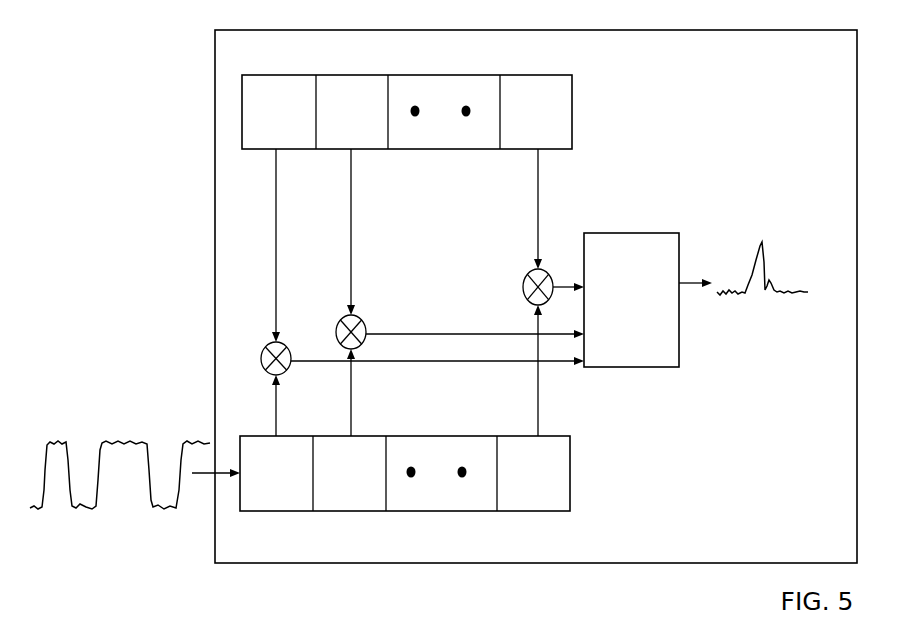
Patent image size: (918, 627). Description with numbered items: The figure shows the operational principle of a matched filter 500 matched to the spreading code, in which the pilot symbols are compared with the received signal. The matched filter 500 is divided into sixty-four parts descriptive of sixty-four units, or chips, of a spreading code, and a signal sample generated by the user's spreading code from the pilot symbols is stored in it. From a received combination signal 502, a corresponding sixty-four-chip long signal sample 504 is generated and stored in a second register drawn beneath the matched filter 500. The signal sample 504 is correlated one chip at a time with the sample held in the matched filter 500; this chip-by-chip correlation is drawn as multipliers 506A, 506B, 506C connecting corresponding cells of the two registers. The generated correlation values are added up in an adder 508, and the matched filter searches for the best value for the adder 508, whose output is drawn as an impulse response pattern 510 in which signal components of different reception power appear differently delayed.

The matched filter 500 is at (573, 135).
The received combination signal 502 is at (63, 443).
The signal sample 504 is at (570, 495).
The multiplier 506A is at (288, 348).
The multiplier 506B is at (365, 323).
The multiplier 506C is at (553, 270).
The adder 508 is at (680, 250).
The output signal 510 is at (765, 262).